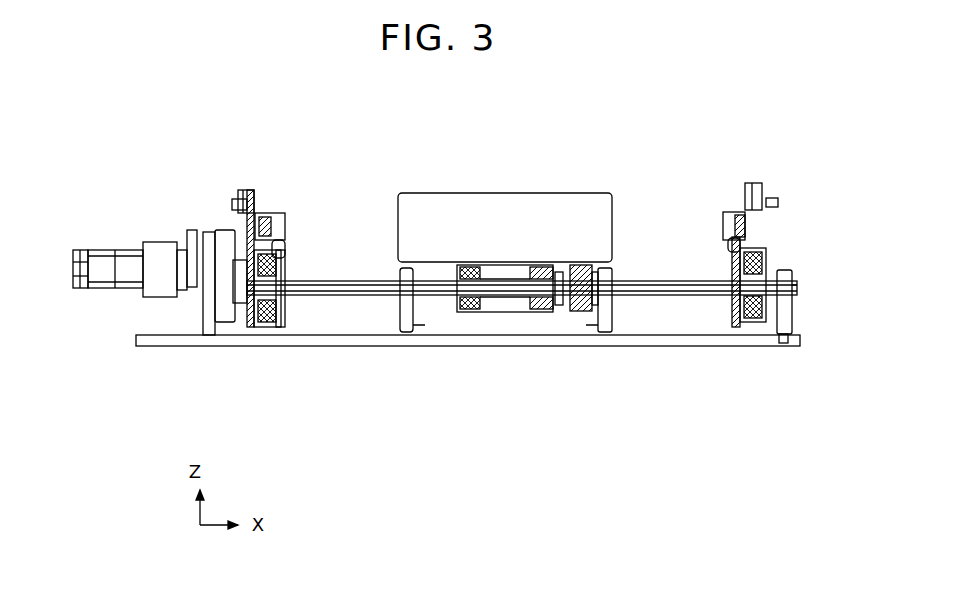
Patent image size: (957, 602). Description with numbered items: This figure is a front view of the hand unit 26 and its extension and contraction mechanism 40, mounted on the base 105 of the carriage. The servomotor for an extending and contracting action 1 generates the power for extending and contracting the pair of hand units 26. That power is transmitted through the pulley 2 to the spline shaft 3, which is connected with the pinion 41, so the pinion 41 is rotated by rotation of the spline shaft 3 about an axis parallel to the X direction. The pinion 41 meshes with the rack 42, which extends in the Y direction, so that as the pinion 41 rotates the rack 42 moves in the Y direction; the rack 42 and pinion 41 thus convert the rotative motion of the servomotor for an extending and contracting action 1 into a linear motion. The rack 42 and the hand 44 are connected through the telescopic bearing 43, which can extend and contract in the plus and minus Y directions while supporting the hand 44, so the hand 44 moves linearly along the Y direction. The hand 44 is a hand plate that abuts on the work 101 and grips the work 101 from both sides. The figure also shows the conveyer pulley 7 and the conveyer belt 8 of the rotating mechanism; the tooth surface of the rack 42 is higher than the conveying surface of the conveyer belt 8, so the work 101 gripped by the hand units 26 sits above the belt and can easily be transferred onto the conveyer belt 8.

The servomotor for an extending and contracting action 1 is at (157, 262).
The pulley 2 is at (230, 323).
The spline shaft 3 is at (668, 297).
The conveyer pulley 7 is at (545, 313).
The conveyer belt 8 is at (508, 313).
The hand unit 26 is at (310, 142).
The extension and contraction mechanism 40 is at (242, 385).
The pinion 41 is at (277, 327).
The rack 42 is at (286, 250).
The telescopic bearing 43 is at (268, 198).
The hand 44 is at (287, 222).
The work 101 is at (473, 195).
The base 105 is at (353, 346).